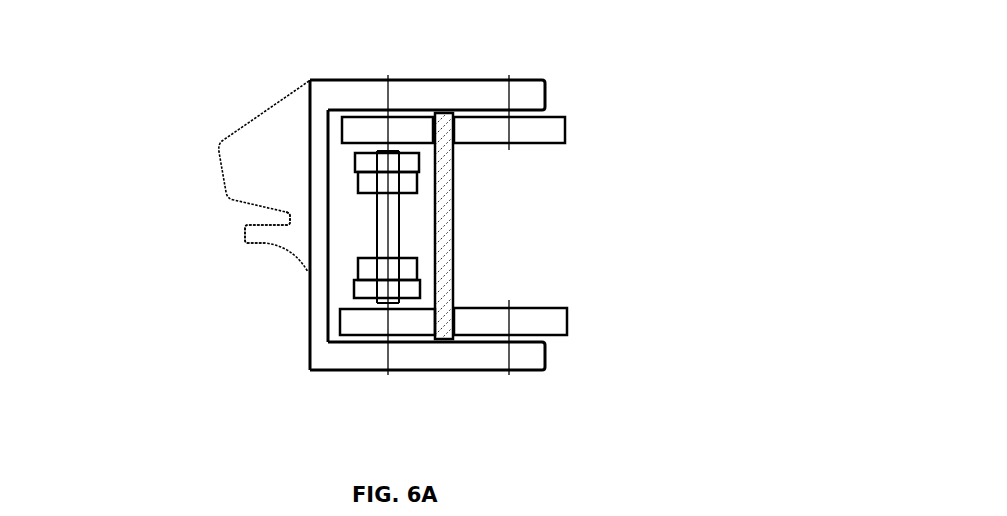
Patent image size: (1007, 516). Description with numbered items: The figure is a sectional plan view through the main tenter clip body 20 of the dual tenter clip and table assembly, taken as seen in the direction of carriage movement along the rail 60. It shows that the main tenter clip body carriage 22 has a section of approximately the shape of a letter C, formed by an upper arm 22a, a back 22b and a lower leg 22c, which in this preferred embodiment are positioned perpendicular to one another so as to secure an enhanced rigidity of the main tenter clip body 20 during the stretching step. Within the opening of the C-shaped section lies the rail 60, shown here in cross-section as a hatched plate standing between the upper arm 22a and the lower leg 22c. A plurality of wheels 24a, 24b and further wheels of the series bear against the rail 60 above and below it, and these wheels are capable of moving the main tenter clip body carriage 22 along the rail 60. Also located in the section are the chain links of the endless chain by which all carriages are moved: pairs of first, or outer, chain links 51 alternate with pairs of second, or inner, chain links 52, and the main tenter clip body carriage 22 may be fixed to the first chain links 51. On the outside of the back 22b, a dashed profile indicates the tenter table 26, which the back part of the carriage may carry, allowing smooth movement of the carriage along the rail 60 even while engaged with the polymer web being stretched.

The main tenter clip body 20 is at (349, 227).
The main tenter clip body carriage 22 is at (172, 115).
The upper arm 22a is at (408, 88).
The back 22b is at (297, 311).
The lower leg 22c is at (450, 355).
The wheel 24a is at (395, 313).
The wheel 24b is at (453, 321).
The tenter table 26 is at (245, 233).
The first chain links 51 is at (390, 287).
The second chain links 52 is at (390, 265).
The rail 60 is at (453, 113).